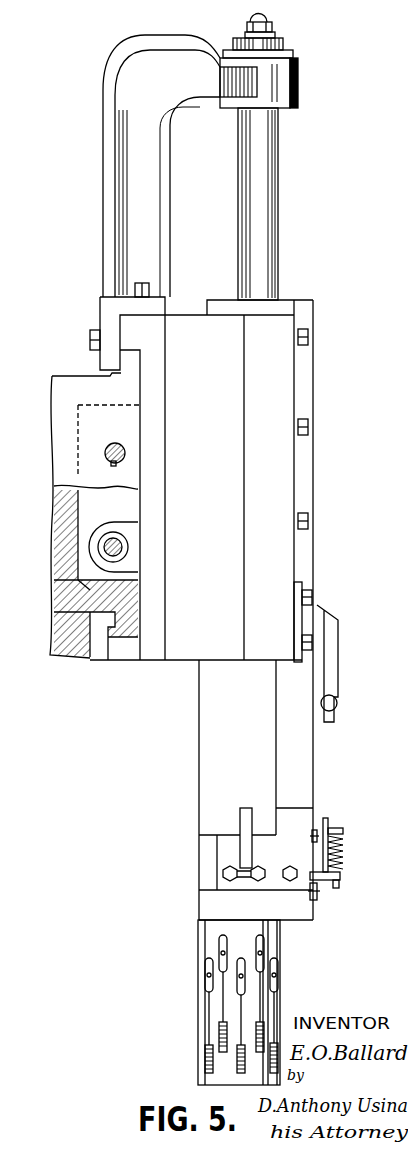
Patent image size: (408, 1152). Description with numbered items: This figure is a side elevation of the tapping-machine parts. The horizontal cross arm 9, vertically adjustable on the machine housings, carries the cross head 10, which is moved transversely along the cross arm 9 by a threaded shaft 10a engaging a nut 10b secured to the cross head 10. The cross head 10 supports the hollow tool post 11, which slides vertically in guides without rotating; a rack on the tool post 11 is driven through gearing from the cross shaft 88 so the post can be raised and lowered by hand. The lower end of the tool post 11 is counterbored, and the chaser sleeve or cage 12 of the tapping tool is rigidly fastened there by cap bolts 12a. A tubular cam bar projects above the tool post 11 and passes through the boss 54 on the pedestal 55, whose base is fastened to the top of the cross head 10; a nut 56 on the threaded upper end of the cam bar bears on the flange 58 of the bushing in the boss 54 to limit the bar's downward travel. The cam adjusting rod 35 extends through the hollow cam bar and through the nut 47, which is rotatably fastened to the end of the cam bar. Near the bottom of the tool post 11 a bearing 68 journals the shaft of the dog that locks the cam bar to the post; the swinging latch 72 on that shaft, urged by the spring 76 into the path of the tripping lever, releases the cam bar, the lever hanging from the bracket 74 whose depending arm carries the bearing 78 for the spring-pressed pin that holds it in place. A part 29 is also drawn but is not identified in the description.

The cam adjusting rod 35 is at (255, 18).
The nut 47 is at (271, 30).
The rod 29 is at (244, 36).
The nut 56 is at (284, 43).
The flange 58 is at (293, 53).
The boss or bearing 54 is at (297, 79).
The bracket or pedestal 55 is at (157, 223).
The cross head 10 is at (201, 601).
The tool post 11 is at (311, 538).
The cross arm 9 is at (78, 514).
The cross shaft 88 is at (104, 452).
The threaded shaft 10a is at (98, 547).
The nut 10b is at (80, 579).
The bracket 74 is at (319, 608).
The bearing 78 is at (337, 703).
The bearing 68 is at (281, 883).
The swinging latch 72 is at (328, 826).
The spring 76 is at (343, 862).
The cap bolts 12a is at (316, 830).
The chaser sleeve or cage 12 is at (281, 994).